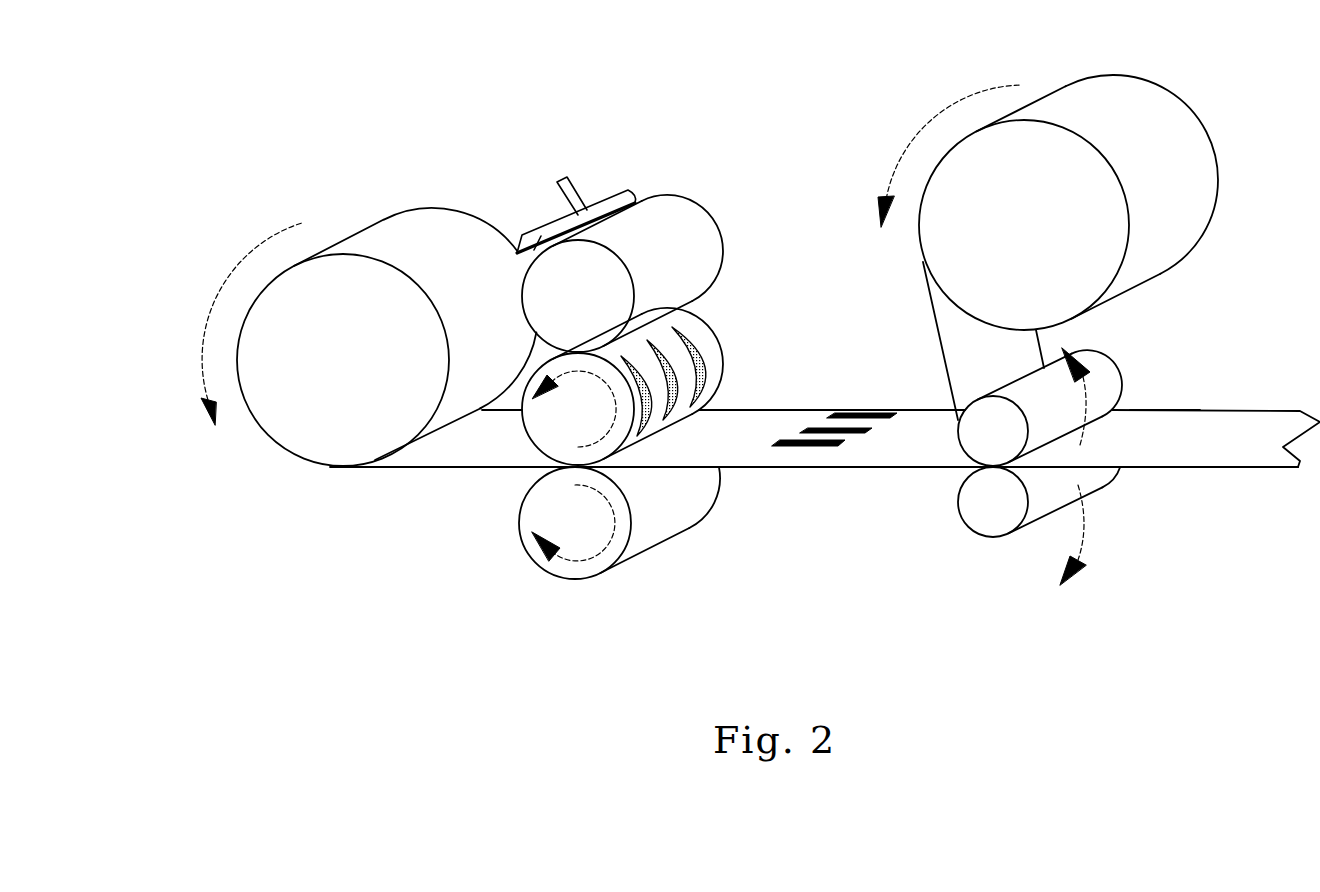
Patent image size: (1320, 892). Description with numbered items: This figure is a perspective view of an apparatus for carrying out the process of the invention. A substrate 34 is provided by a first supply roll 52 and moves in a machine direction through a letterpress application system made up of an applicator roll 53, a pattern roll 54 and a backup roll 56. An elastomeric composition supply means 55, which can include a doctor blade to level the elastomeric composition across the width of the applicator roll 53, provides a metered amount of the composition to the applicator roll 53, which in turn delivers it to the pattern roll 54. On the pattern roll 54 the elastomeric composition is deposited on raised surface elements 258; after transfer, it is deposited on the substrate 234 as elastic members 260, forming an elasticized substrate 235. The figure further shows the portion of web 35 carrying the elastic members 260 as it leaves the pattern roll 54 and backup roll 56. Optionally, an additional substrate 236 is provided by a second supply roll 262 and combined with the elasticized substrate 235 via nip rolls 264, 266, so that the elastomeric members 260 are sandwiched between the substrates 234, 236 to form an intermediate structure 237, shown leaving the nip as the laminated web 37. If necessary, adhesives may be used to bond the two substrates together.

The substrate 34 is at (503, 450).
The substrate 234 is at (457, 435).
The web with adhesive stripes 35 is at (867, 442).
The elasticized substrate 235 is at (918, 437).
The laminated web 37 is at (1152, 435).
The intermediate structure 237 is at (1242, 442).
The first supply roll 52 is at (432, 218).
The applicator roll 53 is at (723, 258).
The pattern roll 54 is at (676, 318).
The elastomeric composition supply means 55 is at (625, 200).
The backup roll 56 is at (528, 553).
The raised surface elements 258 is at (695, 402).
The elastic members 260 is at (862, 415).
The second supply roll 262 is at (1163, 207).
The additional substrate 236 is at (1027, 352).
The nip roll 264 is at (958, 435).
The nip roll 266 is at (988, 540).